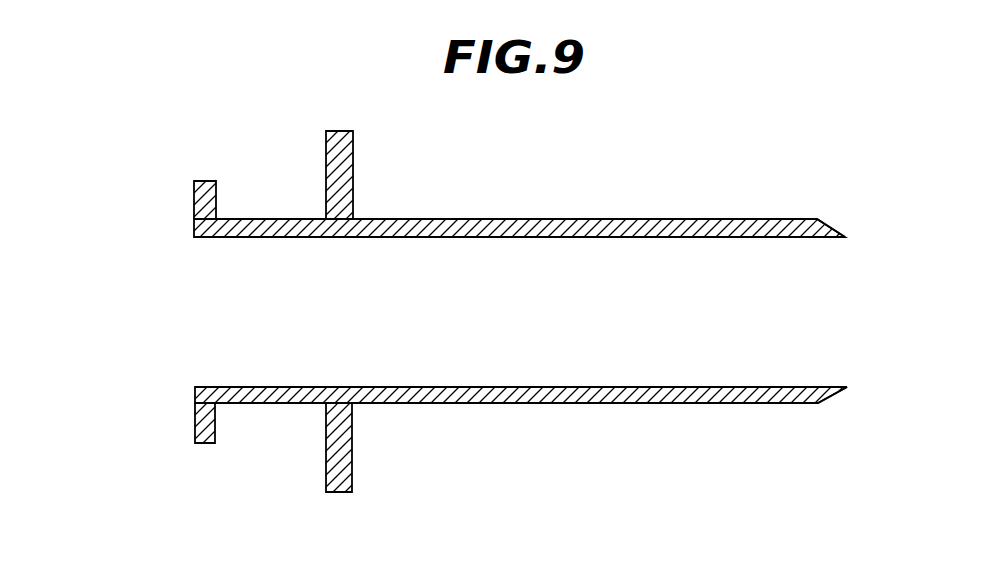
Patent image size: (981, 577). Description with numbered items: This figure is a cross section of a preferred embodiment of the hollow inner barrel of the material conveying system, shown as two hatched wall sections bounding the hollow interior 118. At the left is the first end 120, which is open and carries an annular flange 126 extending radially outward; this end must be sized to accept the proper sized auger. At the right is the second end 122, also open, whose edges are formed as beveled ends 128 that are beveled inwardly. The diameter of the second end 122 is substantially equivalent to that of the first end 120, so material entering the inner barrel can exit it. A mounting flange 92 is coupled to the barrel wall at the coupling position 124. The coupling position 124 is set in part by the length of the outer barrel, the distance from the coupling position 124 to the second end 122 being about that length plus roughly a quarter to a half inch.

The mounting flange 92 is at (325, 157).
The hollow interior 118 is at (540, 367).
The first end 120 is at (452, 410).
The second end 122 is at (782, 218).
The coupling position 124 is at (373, 220).
The annular flange 126 is at (195, 424).
The beveled ends 128 is at (829, 229).